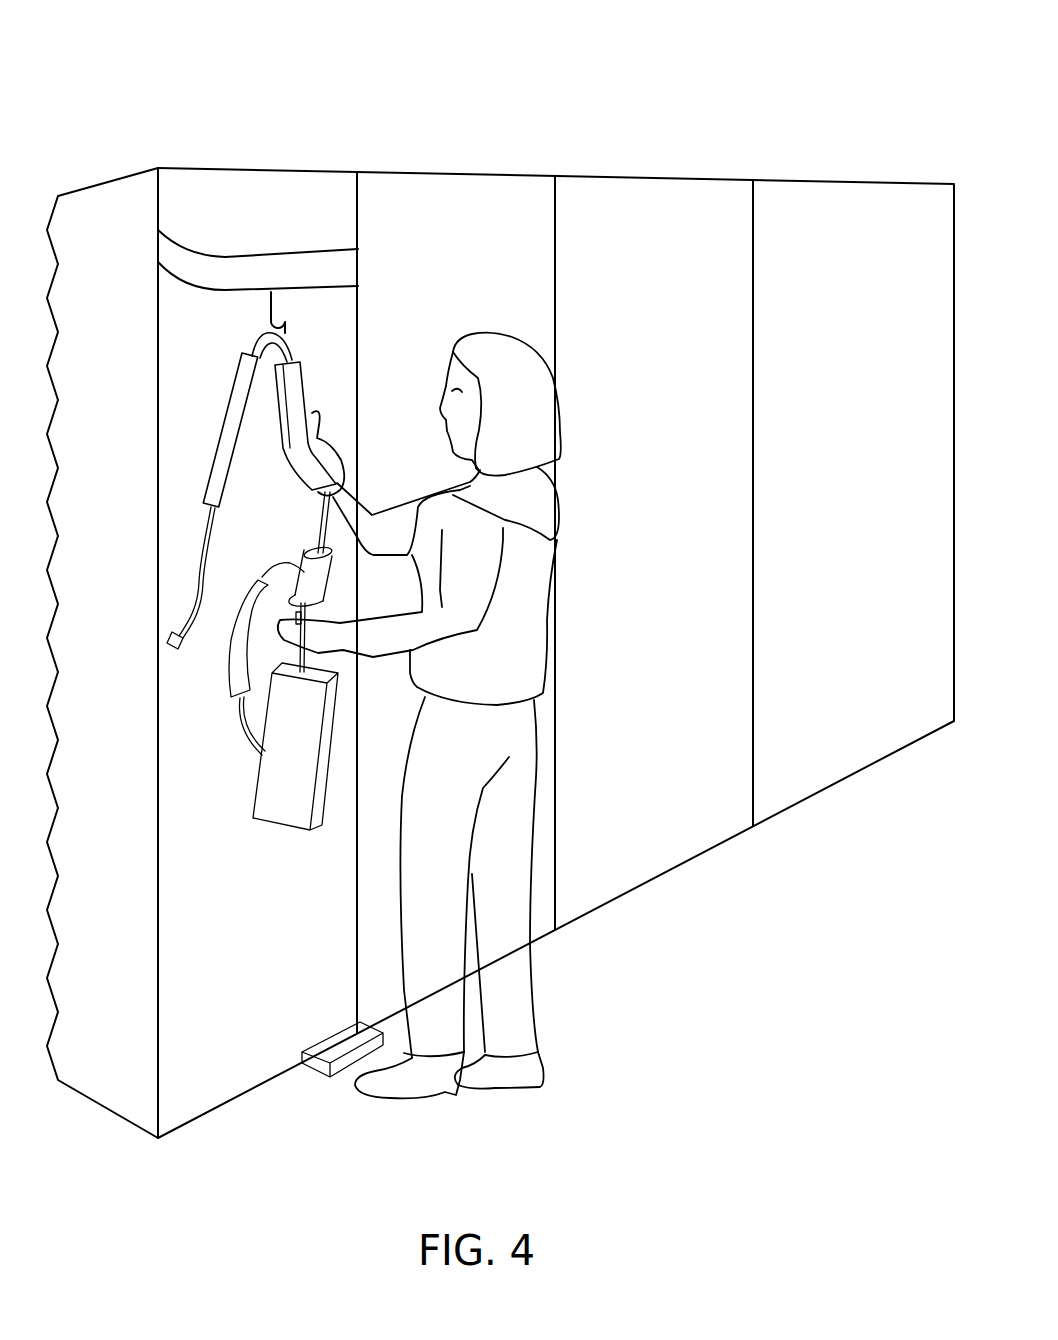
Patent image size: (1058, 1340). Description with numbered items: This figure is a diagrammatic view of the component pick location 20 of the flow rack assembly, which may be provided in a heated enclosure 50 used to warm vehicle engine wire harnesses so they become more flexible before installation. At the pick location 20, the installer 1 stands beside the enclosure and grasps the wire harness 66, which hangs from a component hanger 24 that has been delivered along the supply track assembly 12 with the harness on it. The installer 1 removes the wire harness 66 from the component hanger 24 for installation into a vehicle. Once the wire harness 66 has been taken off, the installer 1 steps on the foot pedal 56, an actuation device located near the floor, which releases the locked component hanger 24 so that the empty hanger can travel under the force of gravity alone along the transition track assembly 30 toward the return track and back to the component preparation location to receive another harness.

The heated enclosure 50 is at (660, 108).
The component pick location 20 is at (410, 197).
The installer 1 is at (605, 460).
The transition track assembly 30 is at (150, 235).
The supply track assembly 12 is at (315, 233).
The component hanger 24 is at (265, 306).
The wire harness 66 is at (233, 410).
The foot pedal 56 is at (332, 1040).